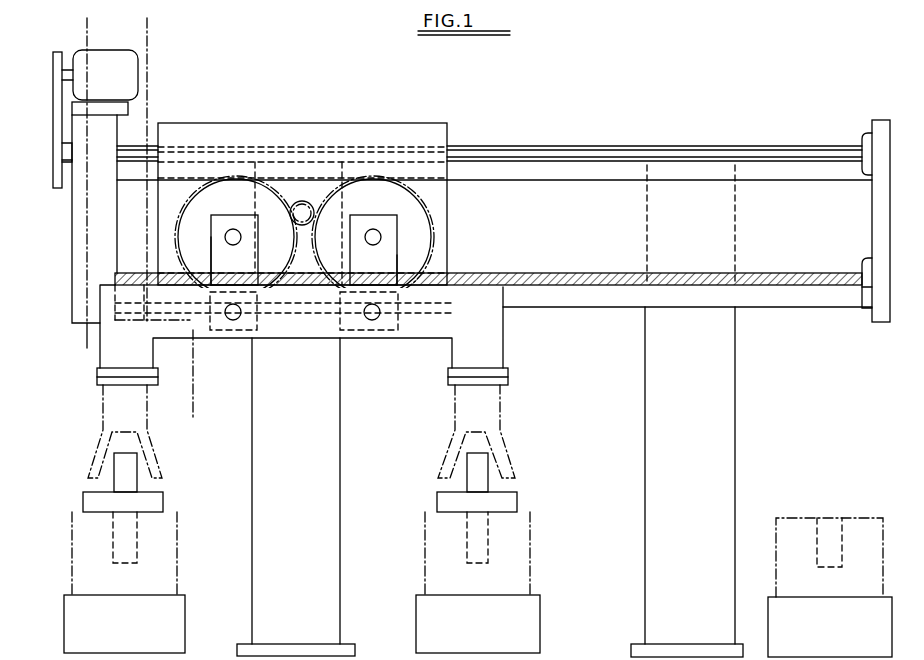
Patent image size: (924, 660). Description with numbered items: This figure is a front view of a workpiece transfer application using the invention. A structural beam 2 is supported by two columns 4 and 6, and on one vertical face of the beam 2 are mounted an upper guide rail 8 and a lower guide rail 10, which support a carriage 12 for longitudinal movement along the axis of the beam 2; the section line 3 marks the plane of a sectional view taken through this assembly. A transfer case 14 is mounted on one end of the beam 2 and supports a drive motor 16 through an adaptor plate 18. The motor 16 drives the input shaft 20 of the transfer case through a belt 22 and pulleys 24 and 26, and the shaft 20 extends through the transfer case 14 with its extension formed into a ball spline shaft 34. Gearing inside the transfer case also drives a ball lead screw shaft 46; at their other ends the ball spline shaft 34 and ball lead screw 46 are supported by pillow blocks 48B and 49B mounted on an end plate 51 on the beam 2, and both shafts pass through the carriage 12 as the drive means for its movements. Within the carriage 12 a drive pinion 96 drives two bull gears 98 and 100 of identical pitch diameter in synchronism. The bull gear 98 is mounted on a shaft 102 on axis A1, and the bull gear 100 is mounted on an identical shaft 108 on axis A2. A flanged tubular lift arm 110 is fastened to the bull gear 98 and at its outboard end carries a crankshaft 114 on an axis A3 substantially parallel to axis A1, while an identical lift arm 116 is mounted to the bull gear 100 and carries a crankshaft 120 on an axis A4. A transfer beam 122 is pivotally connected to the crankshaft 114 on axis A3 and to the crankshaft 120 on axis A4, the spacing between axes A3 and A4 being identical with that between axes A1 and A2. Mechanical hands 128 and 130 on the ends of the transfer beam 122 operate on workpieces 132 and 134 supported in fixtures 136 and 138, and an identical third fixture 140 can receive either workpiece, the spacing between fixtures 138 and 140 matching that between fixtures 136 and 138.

The structural beam 2 is at (195, 35).
The section line 3- 3 is at (77, 35).
The column 4 is at (340, 548).
The column 6 is at (735, 468).
The upper guide rail 8 is at (535, 170).
The lower guide rail 10 is at (833, 300).
The carriage 12 is at (285, 123).
The transfer case 14 is at (72, 265).
The drive motor 16 is at (138, 70).
The adaptor plate 18 is at (128, 108).
The input shaft 20 is at (65, 148).
The belt 22 is at (53, 113).
The pulley 24 is at (62, 70).
The pulley 26 is at (54, 165).
The ball spline shaft 34 is at (768, 158).
The ball lead screw shaft 46 is at (765, 288).
The pillow block 48B is at (862, 138).
The pillow block 49B is at (855, 312).
The end plate 51 is at (872, 225).
The drive pinion 96 is at (306, 203).
The bull gear 98 is at (215, 178).
The bull gear 100 is at (373, 178).
The shaft 102 is at (233, 237).
The shaft 108 is at (378, 232).
The lift arm 110 is at (211, 237).
The crankshaft 114 is at (238, 318).
The lift arm 116 is at (397, 255).
The crankshaft 120 is at (377, 318).
The transfer beam 122 is at (503, 352).
The mechanical hand 128 is at (150, 433).
The mechanical hand 130 is at (503, 432).
The workpiece 132 is at (163, 500).
The workpiece 134 is at (517, 500).
The fixture 136 is at (177, 571).
The fixture 138 is at (530, 571).
The fixture 140 is at (863, 522).
The axis A1 is at (238, 230).
The axis A2 is at (381, 235).
The axis A3 is at (231, 320).
The axis A4 is at (369, 320).